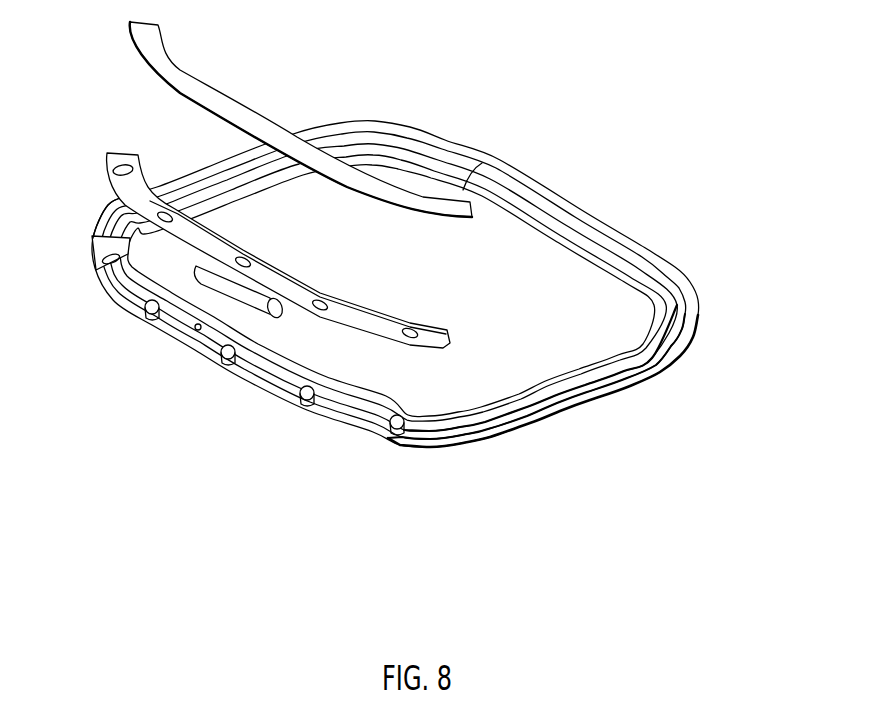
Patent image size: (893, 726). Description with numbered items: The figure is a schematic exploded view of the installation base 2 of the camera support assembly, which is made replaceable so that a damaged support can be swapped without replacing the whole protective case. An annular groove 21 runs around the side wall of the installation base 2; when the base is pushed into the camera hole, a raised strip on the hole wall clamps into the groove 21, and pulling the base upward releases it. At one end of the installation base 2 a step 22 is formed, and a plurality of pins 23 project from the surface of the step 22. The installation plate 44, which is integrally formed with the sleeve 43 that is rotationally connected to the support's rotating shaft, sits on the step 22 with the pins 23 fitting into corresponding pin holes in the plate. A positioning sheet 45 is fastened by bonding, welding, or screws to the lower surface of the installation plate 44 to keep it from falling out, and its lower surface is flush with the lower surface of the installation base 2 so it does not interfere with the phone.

The installation base 2 is at (646, 204).
The groove 21 is at (598, 400).
The step 22 is at (126, 285).
The pins 23 is at (152, 316).
The sleeve 43 is at (237, 292).
The installation plate 44 is at (350, 321).
The positioning sheet 45 is at (402, 199).